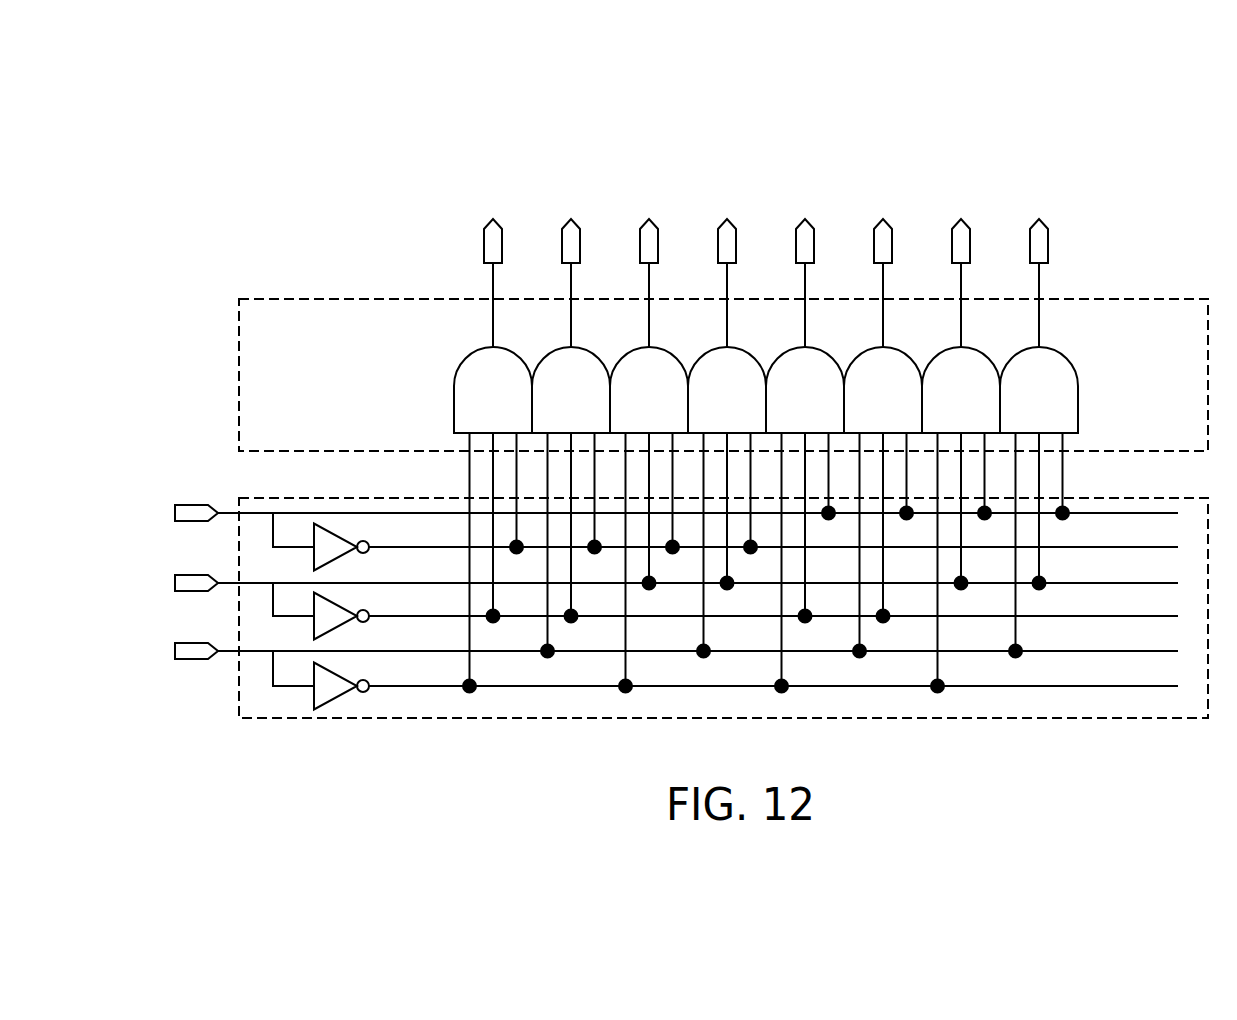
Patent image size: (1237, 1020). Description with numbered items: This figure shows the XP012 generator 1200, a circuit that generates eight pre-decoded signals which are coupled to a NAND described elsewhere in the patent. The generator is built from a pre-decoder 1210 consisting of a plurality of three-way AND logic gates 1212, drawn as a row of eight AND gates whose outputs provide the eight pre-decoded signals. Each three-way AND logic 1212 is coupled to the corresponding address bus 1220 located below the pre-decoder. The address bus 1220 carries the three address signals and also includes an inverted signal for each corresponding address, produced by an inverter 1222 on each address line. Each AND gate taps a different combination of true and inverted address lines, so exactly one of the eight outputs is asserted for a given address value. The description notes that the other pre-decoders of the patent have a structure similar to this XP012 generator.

The decoder circuit 1200 is at (1148, 105).
The pre-decoder 1210 is at (238, 331).
The 3-way AND logic 1212 is at (470, 388).
The address bus 1220 is at (253, 497).
The inverter 1222 is at (331, 537).